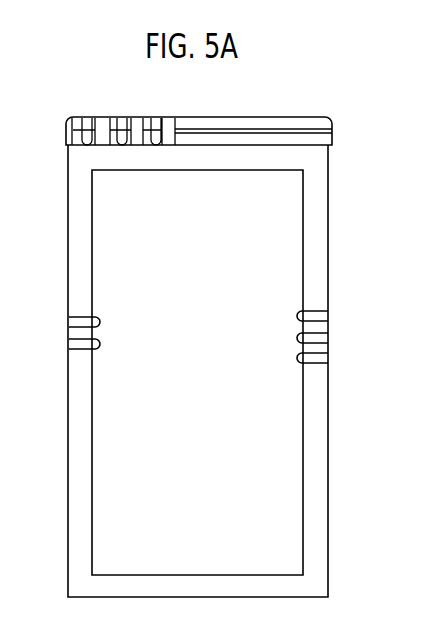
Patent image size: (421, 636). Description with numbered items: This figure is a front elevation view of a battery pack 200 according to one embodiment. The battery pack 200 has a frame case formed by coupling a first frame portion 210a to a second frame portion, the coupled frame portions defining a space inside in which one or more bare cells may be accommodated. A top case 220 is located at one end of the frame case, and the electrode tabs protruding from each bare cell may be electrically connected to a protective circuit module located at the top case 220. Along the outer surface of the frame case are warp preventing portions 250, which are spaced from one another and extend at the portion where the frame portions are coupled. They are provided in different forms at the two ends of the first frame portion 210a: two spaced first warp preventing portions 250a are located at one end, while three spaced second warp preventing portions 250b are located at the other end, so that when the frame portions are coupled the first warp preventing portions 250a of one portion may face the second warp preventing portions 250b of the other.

The battery pack 200 is at (356, 119).
The top case 220 is at (282, 118).
The first frame portion 210a is at (280, 428).
The warp preventing portions 250 is at (394, 268).
The first warp preventing portions 250a is at (68, 344).
The second warp preventing portions 250b is at (322, 358).